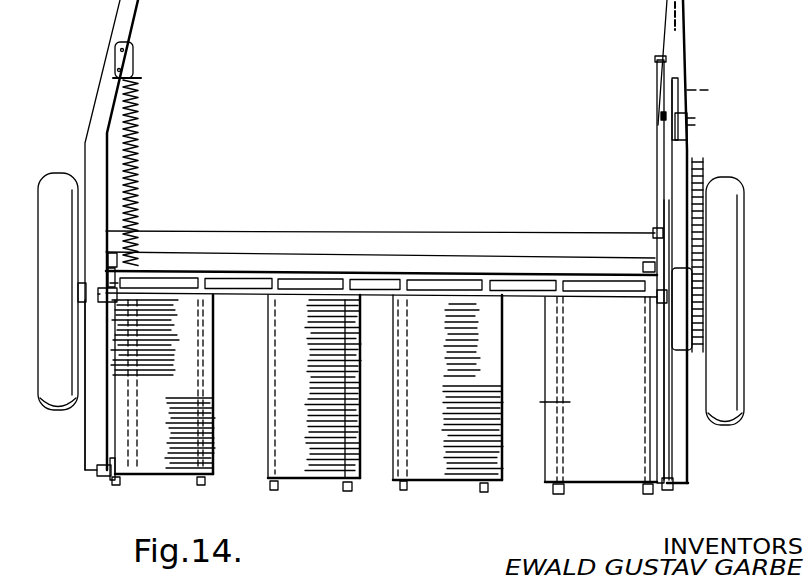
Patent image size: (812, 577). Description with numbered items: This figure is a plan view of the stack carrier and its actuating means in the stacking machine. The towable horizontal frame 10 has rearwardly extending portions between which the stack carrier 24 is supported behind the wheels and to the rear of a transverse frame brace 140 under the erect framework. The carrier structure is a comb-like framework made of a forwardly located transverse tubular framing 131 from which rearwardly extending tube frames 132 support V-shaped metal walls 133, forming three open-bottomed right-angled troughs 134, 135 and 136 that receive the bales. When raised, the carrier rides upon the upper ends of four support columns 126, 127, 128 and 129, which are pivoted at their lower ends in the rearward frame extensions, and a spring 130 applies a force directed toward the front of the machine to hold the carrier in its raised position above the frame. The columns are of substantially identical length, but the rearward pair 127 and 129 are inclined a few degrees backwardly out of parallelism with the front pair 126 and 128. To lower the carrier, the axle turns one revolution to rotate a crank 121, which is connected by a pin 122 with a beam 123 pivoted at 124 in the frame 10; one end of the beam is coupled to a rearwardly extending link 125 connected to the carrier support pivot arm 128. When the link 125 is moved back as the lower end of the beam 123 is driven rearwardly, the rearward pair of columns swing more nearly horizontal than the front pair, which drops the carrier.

The horizontal frame 10 is at (133, 235).
The stack carrier 24 is at (451, 262).
The crank 121 is at (680, 100).
The pin 122 is at (677, 142).
The beam 123 is at (655, 82).
The pivot 124 is at (722, 103).
The rearwardly extending link 125 is at (655, 143).
The support column 126 is at (110, 283).
The support column 127 is at (110, 477).
The carrier support pivot arm 128 is at (668, 246).
The support column 129 is at (665, 488).
The spring 130 is at (140, 187).
The transverse tubular framing 131 is at (313, 277).
The tube frames 132 is at (195, 482).
The V-shaped metal walls 133 is at (182, 403).
The trough 134 is at (523, 349).
The trough 135 is at (380, 347).
The trough 136 is at (243, 349).
The transverse frame brace 140 is at (353, 213).